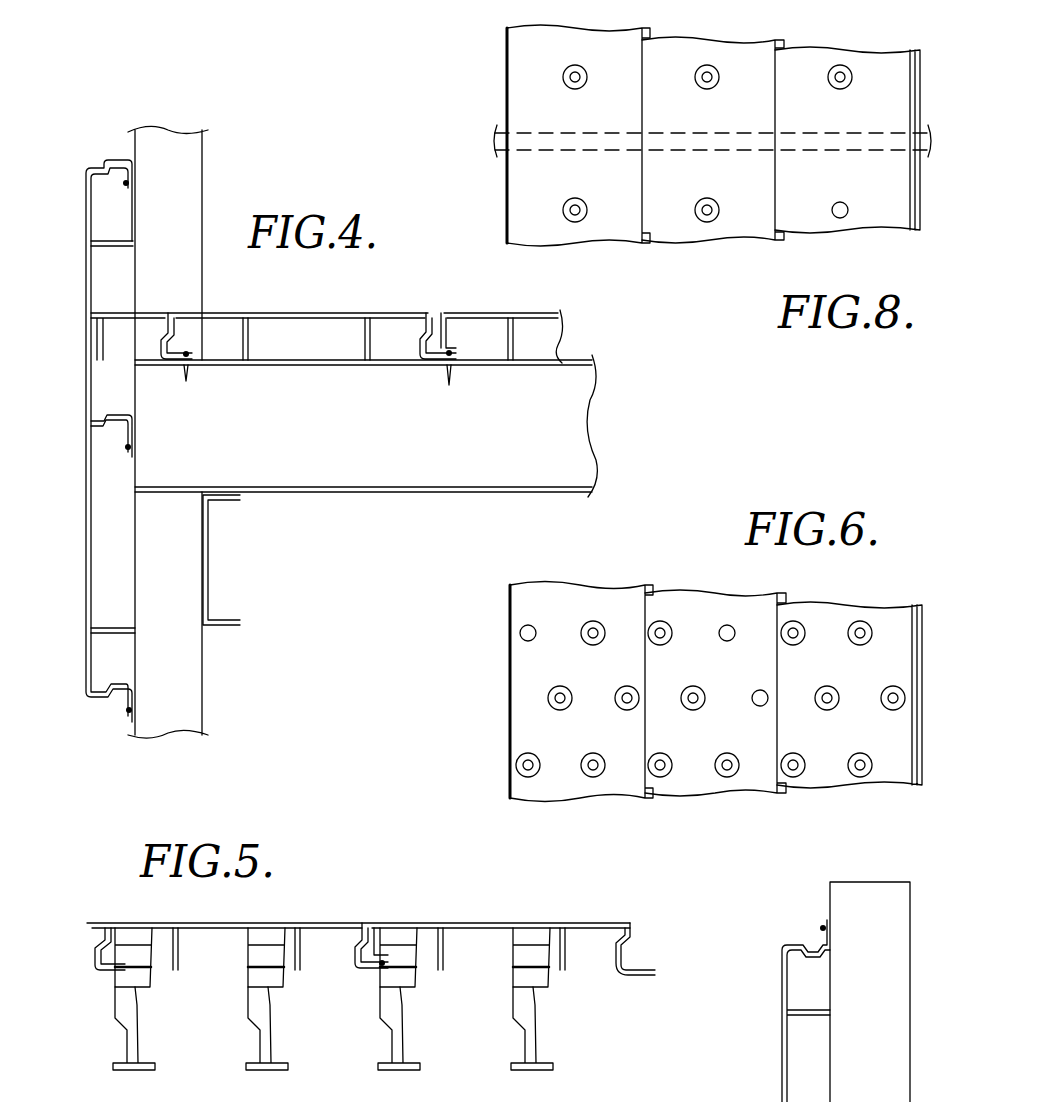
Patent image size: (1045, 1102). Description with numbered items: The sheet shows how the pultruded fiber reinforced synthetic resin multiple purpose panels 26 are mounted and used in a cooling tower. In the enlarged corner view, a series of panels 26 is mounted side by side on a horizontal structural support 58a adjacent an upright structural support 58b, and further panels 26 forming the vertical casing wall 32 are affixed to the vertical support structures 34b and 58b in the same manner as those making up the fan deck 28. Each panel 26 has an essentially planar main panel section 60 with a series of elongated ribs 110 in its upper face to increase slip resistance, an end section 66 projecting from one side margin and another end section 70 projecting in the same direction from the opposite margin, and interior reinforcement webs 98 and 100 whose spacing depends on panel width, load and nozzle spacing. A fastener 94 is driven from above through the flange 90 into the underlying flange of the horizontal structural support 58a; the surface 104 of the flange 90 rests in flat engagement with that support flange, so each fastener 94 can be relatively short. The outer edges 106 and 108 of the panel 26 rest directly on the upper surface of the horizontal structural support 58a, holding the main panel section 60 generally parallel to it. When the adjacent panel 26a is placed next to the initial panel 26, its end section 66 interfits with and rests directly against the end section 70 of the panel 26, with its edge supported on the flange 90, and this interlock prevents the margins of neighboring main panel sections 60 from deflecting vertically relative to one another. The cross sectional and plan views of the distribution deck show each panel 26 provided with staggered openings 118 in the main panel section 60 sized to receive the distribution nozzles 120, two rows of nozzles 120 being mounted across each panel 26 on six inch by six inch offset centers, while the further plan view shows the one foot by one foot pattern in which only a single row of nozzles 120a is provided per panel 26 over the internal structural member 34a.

In FIG. 4, the multiple purpose panel 26 is at (108, 159).
In FIG. 8, the multiple purpose panel 26 is at (500, 72).
In FIG. 6, the multiple purpose panel 26 is at (500, 690).
In FIG. 5, the multiple purpose panel 26 is at (322, 921).
In FIG. 4, the adjacent panel 26a is at (556, 312).
In FIG. 4, the fan deck 28 is at (455, 311).
In FIG. 4, the vertical casing wall 32 is at (82, 576).
In FIG. 8, the internal structural member 34a is at (496, 135).
In FIG. 5, the vertical support structure 34b is at (845, 905).
In FIG. 4, the horizontal structural support 58a is at (365, 470).
In FIG. 4, the upright structural support 58b is at (190, 672).
In FIG. 4, the main panel section 60 is at (248, 312).
In FIG. 5, the main panel section 60 is at (458, 922).
In FIG. 4, the end section 66 is at (169, 311).
In FIG. 5, the end section 66 is at (368, 920).
In FIG. 4, the end section 70 is at (424, 325).
In FIG. 5, the end section 70 is at (648, 936).
In FIG. 4, the flange 90 is at (445, 362).
In FIG. 5, the flange 90 is at (377, 970).
In FIG. 4, the fastener 94 is at (453, 388).
In FIG. 8, the fastener 94 is at (908, 149).
In FIG. 5, the fastener 94 is at (818, 928).
In FIG. 4, the reinforcement web 98 is at (243, 348).
In FIG. 4, the reinforcement web 100 is at (362, 342).
In FIG. 4, the surface of flange 104 is at (458, 364).
In FIG. 4, the outer edge 106 is at (245, 350).
In FIG. 4, the outer edge 108 is at (367, 345).
In FIG. 4, the elongated rib 110 is at (313, 312).
In FIG. 8, the staggered opening 118 is at (841, 218).
In FIG. 6, the staggered opening 118 is at (527, 633).
In FIG. 6, the distribution nozzle 120 is at (650, 630).
In FIG. 5, the distribution nozzle 120 is at (262, 975).
In FIG. 8, the nozzle 120a is at (695, 210).